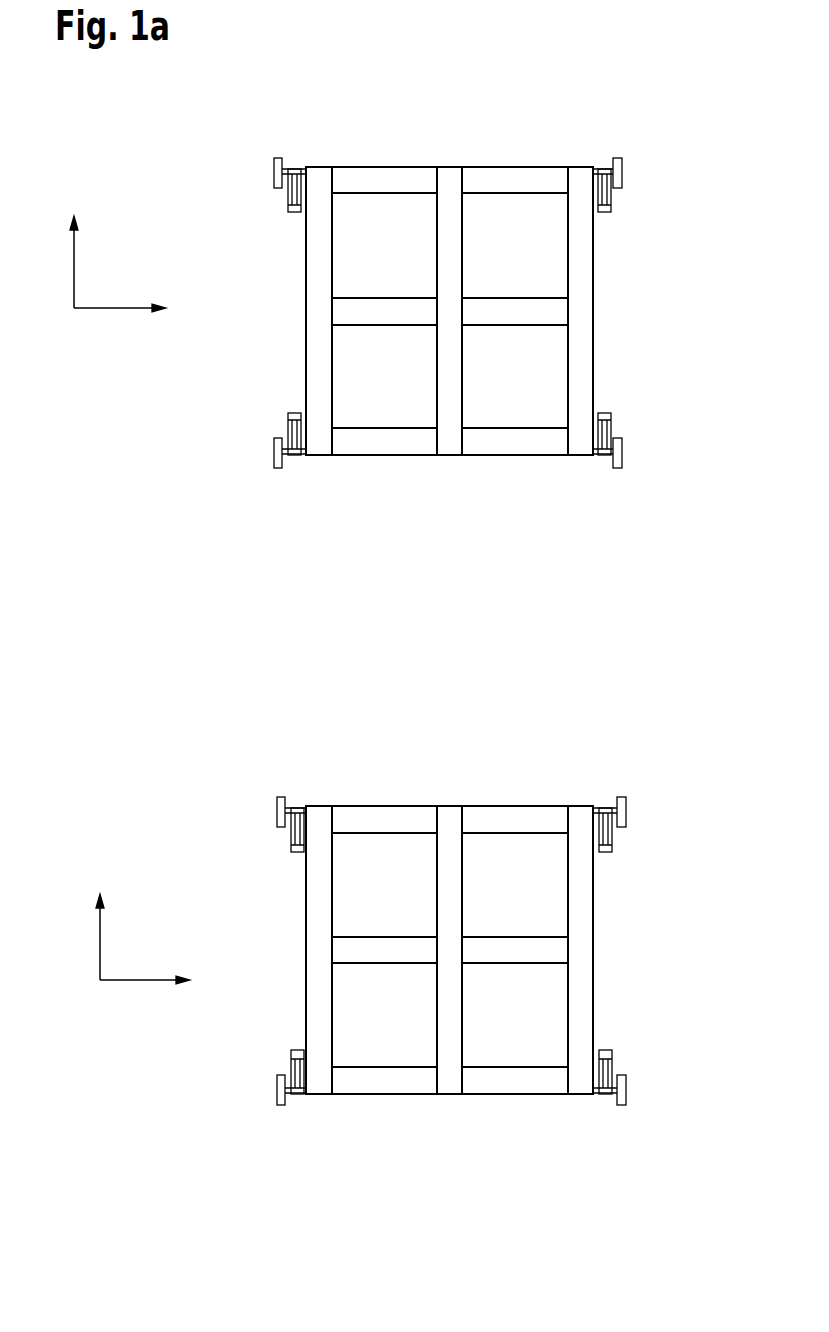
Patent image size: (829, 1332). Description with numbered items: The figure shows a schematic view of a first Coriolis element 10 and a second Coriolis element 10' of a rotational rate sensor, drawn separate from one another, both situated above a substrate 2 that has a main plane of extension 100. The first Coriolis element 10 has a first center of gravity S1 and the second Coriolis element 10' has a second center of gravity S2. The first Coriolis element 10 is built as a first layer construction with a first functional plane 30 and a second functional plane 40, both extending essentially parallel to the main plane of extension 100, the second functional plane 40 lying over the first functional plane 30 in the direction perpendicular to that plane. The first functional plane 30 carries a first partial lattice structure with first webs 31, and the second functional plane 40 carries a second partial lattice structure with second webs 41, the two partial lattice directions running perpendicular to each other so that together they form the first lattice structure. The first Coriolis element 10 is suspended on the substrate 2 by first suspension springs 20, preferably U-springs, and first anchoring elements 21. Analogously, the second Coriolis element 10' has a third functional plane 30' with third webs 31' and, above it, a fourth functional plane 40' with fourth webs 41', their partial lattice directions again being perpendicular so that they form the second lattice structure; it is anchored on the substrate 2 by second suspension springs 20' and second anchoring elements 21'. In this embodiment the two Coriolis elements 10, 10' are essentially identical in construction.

The first Coriolis element 10 is at (483, 248).
The second Coriolis element 10' is at (488, 887).
The substrate 2 is at (248, 335).
The main plane of extension 100 is at (130, 600).
The first suspension springs 20 is at (449, 312).
The second suspension springs 20' is at (451, 951).
The first anchoring elements 21 is at (449, 315).
The second anchoring elements 21' is at (451, 954).
The first functional plane 30 is at (450, 266).
The third functional plane 30' is at (450, 905).
The first webs 31 is at (408, 498).
The third webs 31' is at (408, 1137).
The second functional plane 40 is at (470, 266).
The fourth functional plane 40' is at (475, 905).
The second webs 41 is at (454, 498).
The fourth webs 41' is at (472, 1137).
The first center of gravity S1 is at (447, 312).
The second center of gravity S2 is at (448, 952).